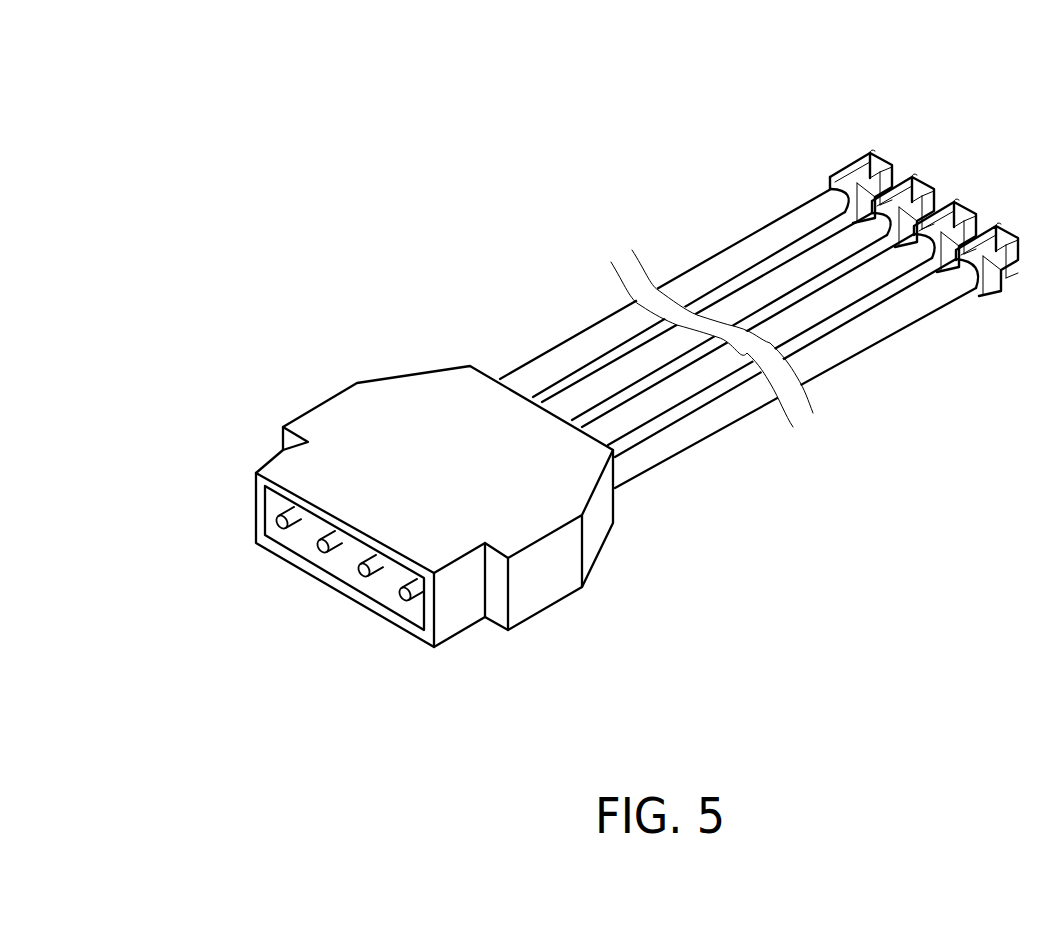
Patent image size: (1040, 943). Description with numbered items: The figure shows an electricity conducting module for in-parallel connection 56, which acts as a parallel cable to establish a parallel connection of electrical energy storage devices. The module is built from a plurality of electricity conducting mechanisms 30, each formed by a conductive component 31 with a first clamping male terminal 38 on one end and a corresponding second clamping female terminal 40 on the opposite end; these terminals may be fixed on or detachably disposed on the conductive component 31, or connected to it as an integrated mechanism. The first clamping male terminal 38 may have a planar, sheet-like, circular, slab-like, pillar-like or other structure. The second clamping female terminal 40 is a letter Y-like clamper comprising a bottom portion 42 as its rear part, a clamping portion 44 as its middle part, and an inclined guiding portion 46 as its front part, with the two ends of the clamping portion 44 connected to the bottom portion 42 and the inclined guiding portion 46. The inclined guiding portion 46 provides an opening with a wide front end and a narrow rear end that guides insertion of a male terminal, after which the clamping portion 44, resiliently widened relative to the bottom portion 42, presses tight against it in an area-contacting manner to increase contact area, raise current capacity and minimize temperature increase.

The electricity conducting mechanism 30 is at (589, 327).
The conductive component 31 is at (587, 342).
The first clamping male terminal 38 is at (275, 522).
The second clamping female terminal 40 is at (910, 73).
The bottom portion 42 is at (828, 180).
The clamping portion 44 is at (857, 172).
The inclined guiding portion 46 is at (872, 155).
The electricity conducting module for in-parallel connection 56 is at (413, 152).